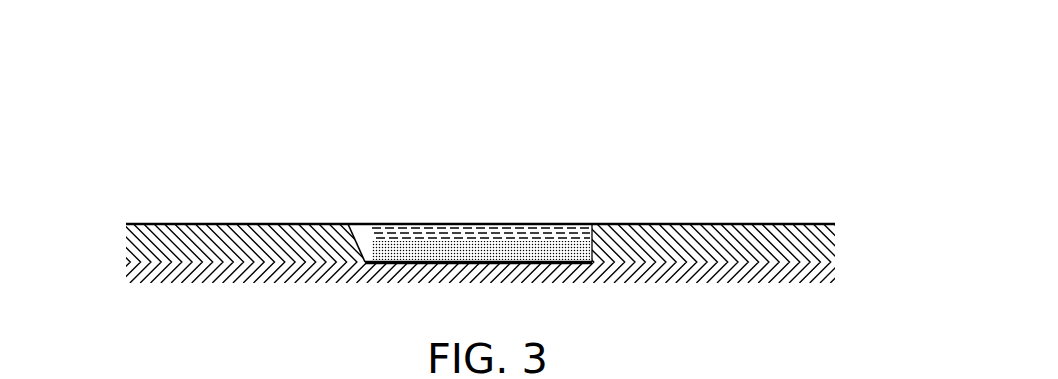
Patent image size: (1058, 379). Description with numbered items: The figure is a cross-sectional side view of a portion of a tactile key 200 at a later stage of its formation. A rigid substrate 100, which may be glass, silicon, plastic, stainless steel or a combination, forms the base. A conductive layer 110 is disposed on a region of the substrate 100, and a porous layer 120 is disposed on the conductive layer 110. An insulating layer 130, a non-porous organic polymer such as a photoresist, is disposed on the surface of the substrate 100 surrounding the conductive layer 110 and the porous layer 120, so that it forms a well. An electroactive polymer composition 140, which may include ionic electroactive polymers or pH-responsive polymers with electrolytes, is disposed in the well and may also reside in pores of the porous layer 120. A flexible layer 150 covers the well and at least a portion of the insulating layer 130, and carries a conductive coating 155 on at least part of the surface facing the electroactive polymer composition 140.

The substrate 100 is at (123, 272).
The conductive layer 110 is at (360, 250).
The porous layer 120 is at (541, 248).
The insulating layer 130 is at (677, 221).
The electroactive polymer composition 140 is at (493, 222).
The flexible layer 150 is at (416, 220).
The conductive coating 155 is at (819, 223).
The tactile key 200 is at (731, 131).